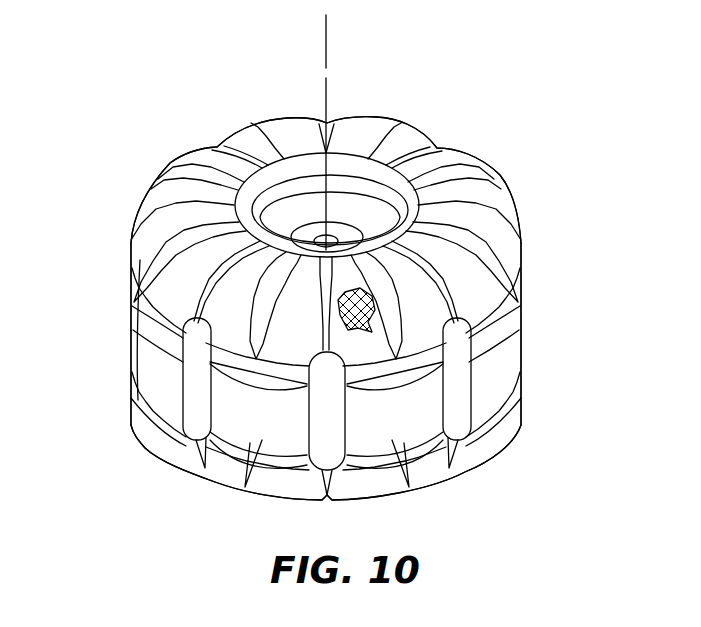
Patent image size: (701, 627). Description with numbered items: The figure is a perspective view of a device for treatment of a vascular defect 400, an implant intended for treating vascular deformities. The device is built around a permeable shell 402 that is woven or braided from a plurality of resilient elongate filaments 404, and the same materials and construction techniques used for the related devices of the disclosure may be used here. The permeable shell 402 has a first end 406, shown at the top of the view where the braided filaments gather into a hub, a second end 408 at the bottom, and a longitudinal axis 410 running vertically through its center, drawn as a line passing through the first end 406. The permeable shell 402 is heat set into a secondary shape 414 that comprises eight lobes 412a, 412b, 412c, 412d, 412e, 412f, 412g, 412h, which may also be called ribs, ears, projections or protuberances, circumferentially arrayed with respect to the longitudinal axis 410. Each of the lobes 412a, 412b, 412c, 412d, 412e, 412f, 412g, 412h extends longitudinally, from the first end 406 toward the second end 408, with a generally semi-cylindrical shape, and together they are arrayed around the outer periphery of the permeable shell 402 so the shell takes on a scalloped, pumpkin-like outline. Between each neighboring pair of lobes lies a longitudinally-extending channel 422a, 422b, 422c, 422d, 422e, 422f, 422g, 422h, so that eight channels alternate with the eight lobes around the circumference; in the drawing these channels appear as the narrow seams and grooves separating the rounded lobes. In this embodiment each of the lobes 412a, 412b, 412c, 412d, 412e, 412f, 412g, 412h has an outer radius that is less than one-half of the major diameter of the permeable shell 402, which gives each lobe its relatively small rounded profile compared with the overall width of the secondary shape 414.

The device for treatment of a vascular defect 400 is at (155, 125).
The permeable shell 402 is at (507, 352).
The resilient elongate filaments 404 is at (373, 300).
The first end 406 is at (408, 150).
The second end 408 is at (430, 480).
The longitudinal axis 410 is at (329, 72).
The lobe 412a is at (407, 413).
The lobe 412b is at (262, 442).
The lobe 412c is at (148, 363).
The lobe 412d is at (158, 183).
The lobe 412e is at (273, 118).
The lobe 412f is at (397, 127).
The lobe 412g is at (498, 180).
The lobe 412h is at (513, 367).
The secondary shape 414 is at (116, 283).
The longitudinally-extending channel 422a is at (343, 495).
The longitudinally-extending channel 422b is at (203, 397).
The longitudinally-extending channel 422c is at (182, 220).
The longitudinally-extending channel 422d is at (217, 147).
The longitudinally-extending channel 422e is at (330, 121).
The longitudinally-extending channel 422f is at (440, 150).
The longitudinally-extending channel 422g is at (469, 220).
The longitudinally-extending channel 422h is at (470, 406).